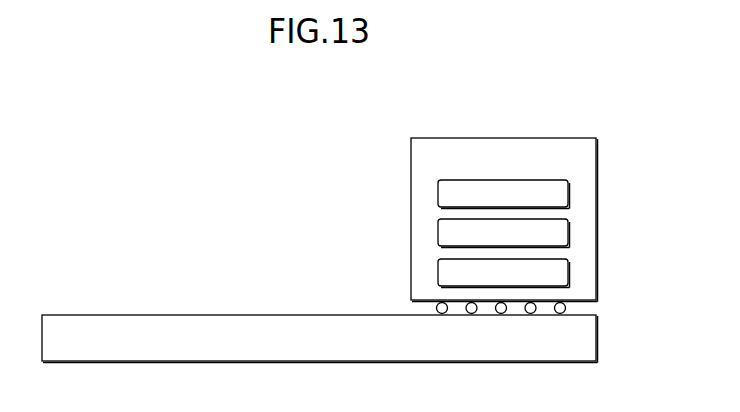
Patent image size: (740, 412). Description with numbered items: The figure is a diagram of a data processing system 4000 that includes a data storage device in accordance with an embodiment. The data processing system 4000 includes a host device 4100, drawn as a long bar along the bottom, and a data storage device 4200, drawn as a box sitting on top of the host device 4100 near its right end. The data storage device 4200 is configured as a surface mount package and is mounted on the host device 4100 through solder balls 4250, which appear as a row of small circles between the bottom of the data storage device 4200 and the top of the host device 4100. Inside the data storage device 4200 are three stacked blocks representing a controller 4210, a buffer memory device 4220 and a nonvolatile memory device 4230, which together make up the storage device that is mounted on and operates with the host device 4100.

The data processing system 4000 is at (115, 114).
The host device 4100 is at (320, 339).
The data storage device 4200 is at (504, 220).
The controller 4210 is at (504, 194).
The buffer memory device 4220 is at (504, 233).
The nonvolatile memory device 4230 is at (504, 273).
The solder balls 4250 is at (574, 310).